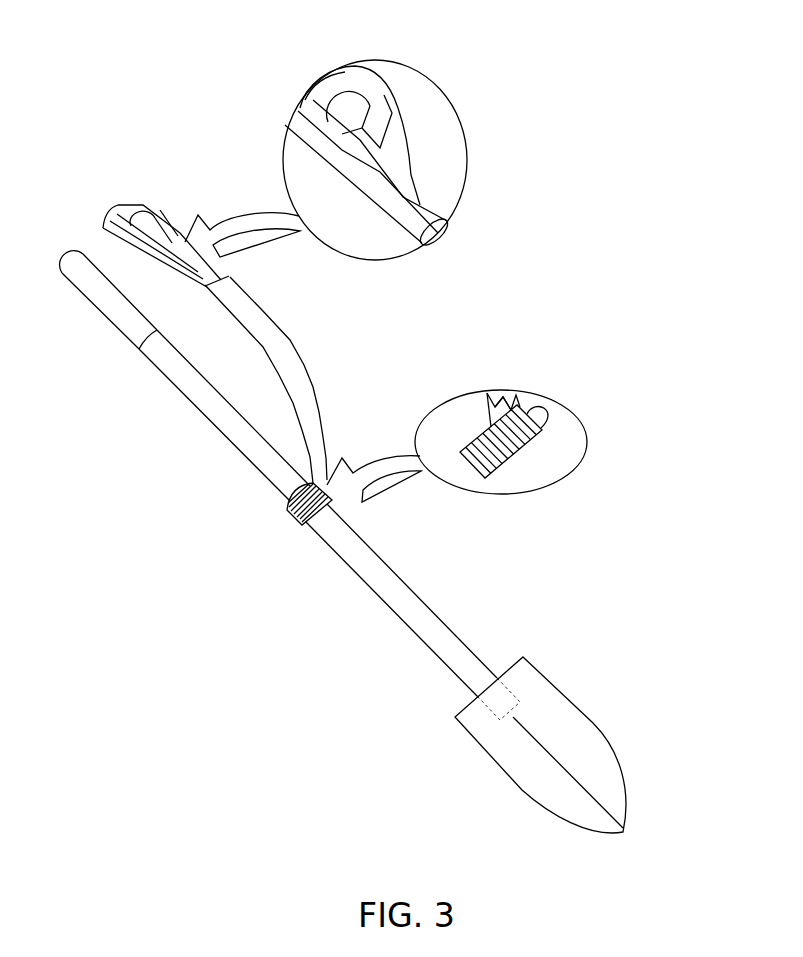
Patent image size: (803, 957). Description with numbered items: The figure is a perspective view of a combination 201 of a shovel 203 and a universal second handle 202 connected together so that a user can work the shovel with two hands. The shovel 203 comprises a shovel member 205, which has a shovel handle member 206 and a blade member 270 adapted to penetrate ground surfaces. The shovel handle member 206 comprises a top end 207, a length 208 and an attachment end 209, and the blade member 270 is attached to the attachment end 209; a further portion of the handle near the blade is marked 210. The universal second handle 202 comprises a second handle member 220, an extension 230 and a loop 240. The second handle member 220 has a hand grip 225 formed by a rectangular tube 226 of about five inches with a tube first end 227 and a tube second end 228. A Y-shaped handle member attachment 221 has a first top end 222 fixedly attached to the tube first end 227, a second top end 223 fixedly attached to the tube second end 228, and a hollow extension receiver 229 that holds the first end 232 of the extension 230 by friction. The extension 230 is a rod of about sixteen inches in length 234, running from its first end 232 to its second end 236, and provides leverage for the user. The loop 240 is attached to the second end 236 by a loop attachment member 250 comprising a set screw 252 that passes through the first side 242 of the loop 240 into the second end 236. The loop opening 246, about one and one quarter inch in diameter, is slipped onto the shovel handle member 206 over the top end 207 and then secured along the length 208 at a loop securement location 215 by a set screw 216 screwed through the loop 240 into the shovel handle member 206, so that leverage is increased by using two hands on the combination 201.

The combination 201 is at (576, 61).
The universal second handle 202 is at (604, 87).
The shovel 203 is at (632, 121).
The shovel member 205 is at (208, 426).
The shovel handle member 206 is at (418, 592).
The top end 207 is at (69, 250).
The length 208 is at (357, 573).
The attachment end 209 is at (475, 695).
The distal shaft portion 210 is at (452, 628).
The loop securement location 215 is at (283, 503).
The set screw 216 is at (283, 527).
The second handle member 220 is at (396, 117).
The handle member attachment 221 is at (409, 161).
The first top end 222 is at (288, 122).
The second top end 223 is at (374, 94).
The hand grip 225 is at (318, 77).
The rectangular tube 226 is at (303, 87).
The tube first end 227 is at (298, 100).
The tube second end 228 is at (352, 67).
The hollow extension receiver 229 is at (441, 205).
The extension 230 is at (291, 340).
The first end 232 is at (231, 274).
The length 234 is at (314, 387).
The second end 236 is at (328, 478).
The loop 240 is at (523, 403).
The first side 242 is at (547, 432).
The loop opening 246 is at (517, 457).
The loop attachment member 250 is at (543, 405).
The set screw 252 is at (544, 420).
The blade member 270 is at (552, 677).